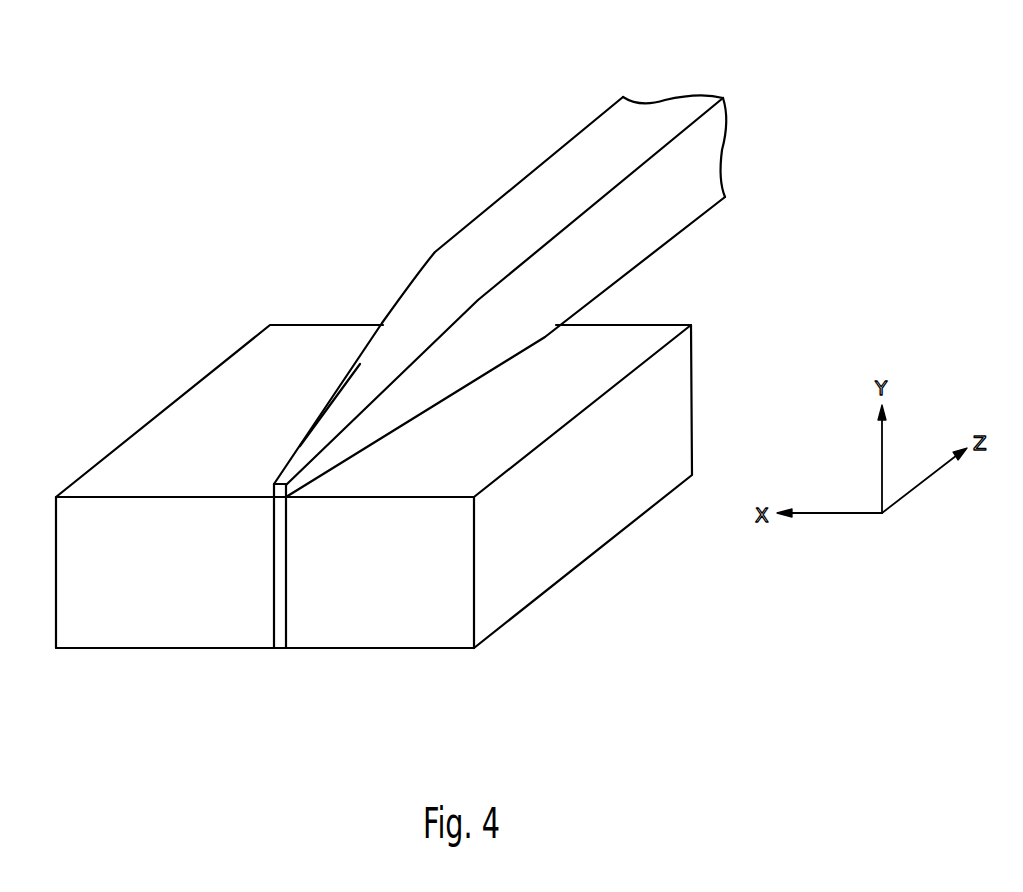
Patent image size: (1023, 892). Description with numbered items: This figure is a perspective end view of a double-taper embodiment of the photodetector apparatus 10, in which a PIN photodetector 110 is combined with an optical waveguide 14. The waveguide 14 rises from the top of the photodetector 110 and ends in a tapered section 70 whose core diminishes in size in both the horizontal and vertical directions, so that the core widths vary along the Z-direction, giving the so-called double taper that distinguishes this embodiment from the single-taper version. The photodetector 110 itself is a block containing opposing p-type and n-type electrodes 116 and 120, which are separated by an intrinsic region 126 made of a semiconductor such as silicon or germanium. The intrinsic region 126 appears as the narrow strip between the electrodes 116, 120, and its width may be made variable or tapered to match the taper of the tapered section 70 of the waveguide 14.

The photodetector apparatus 10 is at (755, 58).
The waveguide 14 is at (533, 162).
The tapered section 70 is at (332, 385).
The PIN photodetector 110 is at (622, 512).
The p-type electrode 116 is at (149, 637).
The n-type electrode 120 is at (396, 637).
The intrinsic region 126 is at (279, 637).